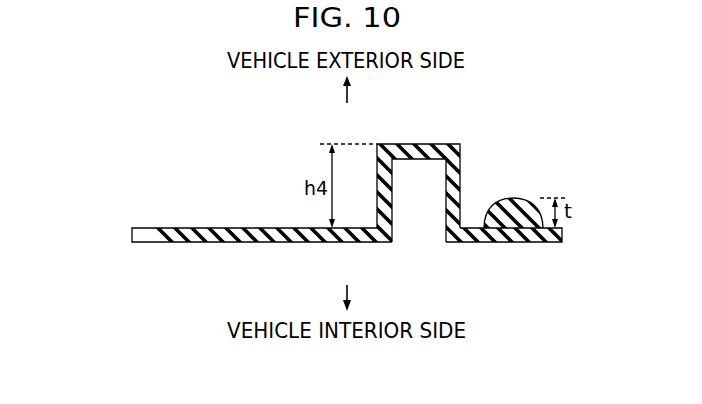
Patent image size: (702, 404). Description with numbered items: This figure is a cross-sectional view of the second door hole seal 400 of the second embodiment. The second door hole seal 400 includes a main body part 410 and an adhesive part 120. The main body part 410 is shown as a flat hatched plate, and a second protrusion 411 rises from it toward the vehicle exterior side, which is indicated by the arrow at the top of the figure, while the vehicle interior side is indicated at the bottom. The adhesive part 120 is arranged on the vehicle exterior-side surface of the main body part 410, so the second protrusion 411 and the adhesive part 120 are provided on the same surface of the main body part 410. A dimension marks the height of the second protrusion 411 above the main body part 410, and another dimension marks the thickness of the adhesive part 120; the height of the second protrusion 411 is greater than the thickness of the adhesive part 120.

The second door hole seal 400 is at (110, 163).
The main body part 410 is at (186, 228).
The second protrusion 411 is at (425, 144).
The adhesive part 120 is at (516, 198).